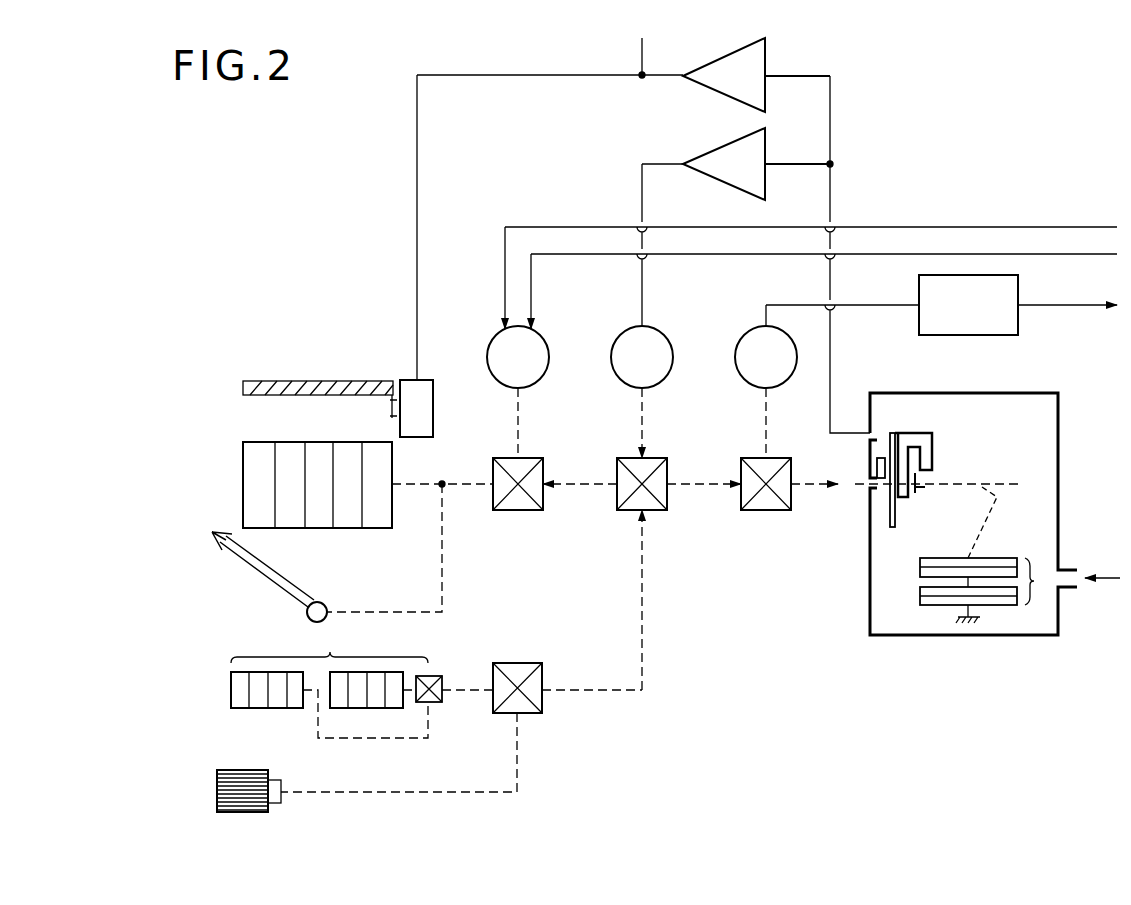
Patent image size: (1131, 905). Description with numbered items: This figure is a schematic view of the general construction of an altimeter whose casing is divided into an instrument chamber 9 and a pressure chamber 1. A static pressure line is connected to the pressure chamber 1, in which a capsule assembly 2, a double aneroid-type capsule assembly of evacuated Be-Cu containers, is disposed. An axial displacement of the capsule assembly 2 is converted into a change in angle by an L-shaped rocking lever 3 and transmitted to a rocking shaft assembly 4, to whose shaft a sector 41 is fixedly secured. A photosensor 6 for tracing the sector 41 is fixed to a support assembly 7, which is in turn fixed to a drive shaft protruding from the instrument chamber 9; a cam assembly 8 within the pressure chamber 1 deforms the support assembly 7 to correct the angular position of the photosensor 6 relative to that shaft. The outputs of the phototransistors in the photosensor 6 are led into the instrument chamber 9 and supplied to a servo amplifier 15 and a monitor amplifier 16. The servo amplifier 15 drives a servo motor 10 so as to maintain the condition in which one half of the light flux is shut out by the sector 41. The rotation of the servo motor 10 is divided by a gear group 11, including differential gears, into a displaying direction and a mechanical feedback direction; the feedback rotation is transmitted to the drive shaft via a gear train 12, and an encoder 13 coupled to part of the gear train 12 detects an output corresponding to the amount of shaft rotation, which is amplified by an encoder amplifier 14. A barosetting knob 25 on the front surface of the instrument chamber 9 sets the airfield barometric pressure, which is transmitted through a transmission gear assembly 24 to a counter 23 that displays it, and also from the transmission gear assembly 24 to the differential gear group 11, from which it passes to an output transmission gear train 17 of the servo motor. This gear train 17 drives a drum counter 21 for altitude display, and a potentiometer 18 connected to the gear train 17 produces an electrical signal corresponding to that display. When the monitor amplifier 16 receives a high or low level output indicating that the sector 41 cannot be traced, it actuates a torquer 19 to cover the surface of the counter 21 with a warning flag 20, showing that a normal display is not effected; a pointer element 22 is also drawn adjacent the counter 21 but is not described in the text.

The pressure chamber 1 is at (1043, 393).
The capsule assembly 2 is at (985, 590).
The rocking lever 3 is at (993, 513).
The rocking shaft assembly 4 is at (988, 485).
The photosensor 6 is at (932, 445).
The support assembly 7 is at (890, 515).
The cam assembly 8 is at (877, 465).
The instrument chamber 9 is at (533, 161).
The servo motor 10 is at (664, 340).
The gear group 11 is at (667, 462).
The gear train 12 is at (791, 462).
The encoder 13 is at (750, 340).
The encoder amplifier 14 is at (1018, 328).
The servo amplifier 15 is at (770, 184).
The monitor amplifier 16 is at (770, 90).
The output transmission gear train 17 is at (543, 462).
The potentiometer 18 is at (544, 340).
The torquer 19 is at (433, 380).
The warning flag 20 is at (375, 381).
The drum counter 21 is at (357, 530).
The pointer 22 is at (258, 577).
The counter 23 is at (362, 683).
The transmission gear assembly 24 is at (540, 664).
The barosetting knob 25 is at (265, 770).
The sector 41 is at (920, 477).